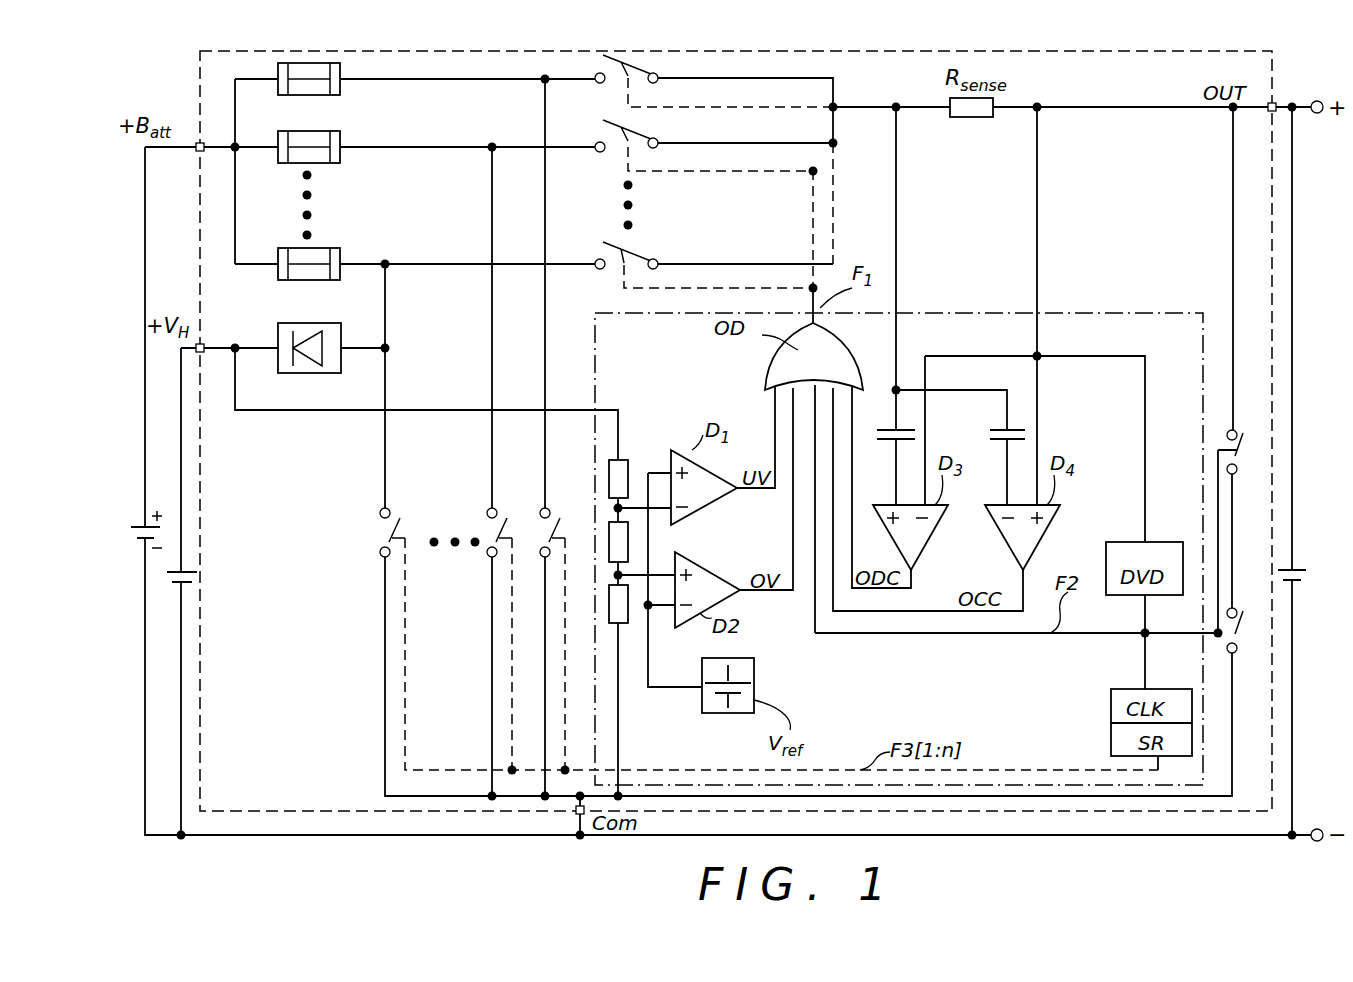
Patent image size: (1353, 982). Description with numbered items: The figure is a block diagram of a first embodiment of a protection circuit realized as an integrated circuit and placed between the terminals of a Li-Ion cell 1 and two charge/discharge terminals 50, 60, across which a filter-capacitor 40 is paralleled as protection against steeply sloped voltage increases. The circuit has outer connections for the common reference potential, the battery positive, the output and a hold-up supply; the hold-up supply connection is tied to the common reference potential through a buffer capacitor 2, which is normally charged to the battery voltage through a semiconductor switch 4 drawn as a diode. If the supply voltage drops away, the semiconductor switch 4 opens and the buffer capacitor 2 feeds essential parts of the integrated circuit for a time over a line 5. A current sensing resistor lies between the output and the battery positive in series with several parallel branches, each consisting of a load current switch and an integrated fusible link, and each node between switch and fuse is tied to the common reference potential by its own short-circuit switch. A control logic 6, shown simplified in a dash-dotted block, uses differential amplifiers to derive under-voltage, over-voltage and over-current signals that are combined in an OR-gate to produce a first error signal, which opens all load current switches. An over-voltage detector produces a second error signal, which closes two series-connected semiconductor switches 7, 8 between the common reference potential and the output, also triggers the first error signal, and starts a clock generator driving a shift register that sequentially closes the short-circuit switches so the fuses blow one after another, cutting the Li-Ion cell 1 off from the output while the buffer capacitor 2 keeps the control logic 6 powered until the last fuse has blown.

The Li-Ion cell 1 is at (140, 522).
The buffer capacitor 2 is at (186, 568).
The semiconductor switch 4 is at (278, 330).
The line 5 is at (400, 410).
The control logic 6 is at (1085, 313).
The semiconductor switch 7 is at (1240, 445).
The semiconductor switch 8 is at (1240, 628).
The filter-capacitor 40 is at (1303, 576).
The charge/discharge terminal 50 is at (1318, 805).
The charge/discharge terminal 60 is at (1317, 114).